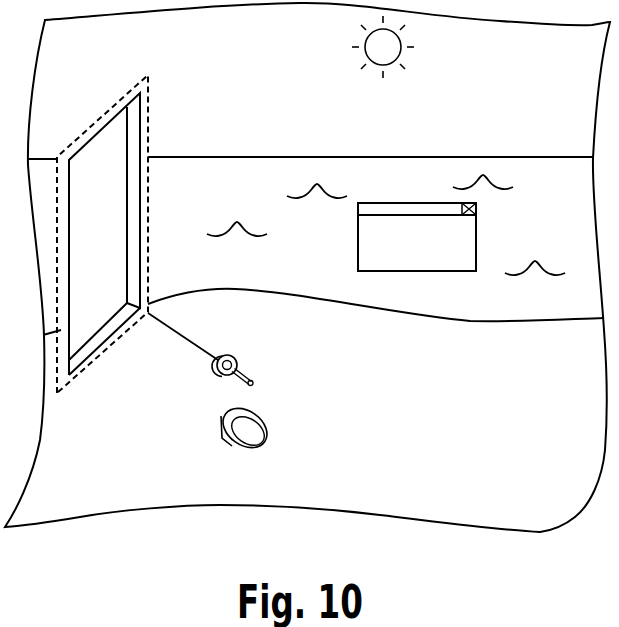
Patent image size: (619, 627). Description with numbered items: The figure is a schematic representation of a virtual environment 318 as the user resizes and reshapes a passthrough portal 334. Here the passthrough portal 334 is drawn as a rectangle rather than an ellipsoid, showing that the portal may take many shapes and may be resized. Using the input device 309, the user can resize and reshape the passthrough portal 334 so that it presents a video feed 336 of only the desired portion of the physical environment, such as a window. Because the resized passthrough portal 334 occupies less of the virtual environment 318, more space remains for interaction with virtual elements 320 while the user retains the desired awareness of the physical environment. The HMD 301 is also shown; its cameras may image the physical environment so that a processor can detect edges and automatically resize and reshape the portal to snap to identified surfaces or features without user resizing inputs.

The virtual environment 318 is at (540, 500).
The passthrough portal 334 is at (148, 140).
The video feed 336 is at (108, 148).
The virtual elements 320 is at (410, 200).
The input device 309 is at (253, 385).
The HMD 301 is at (272, 438).